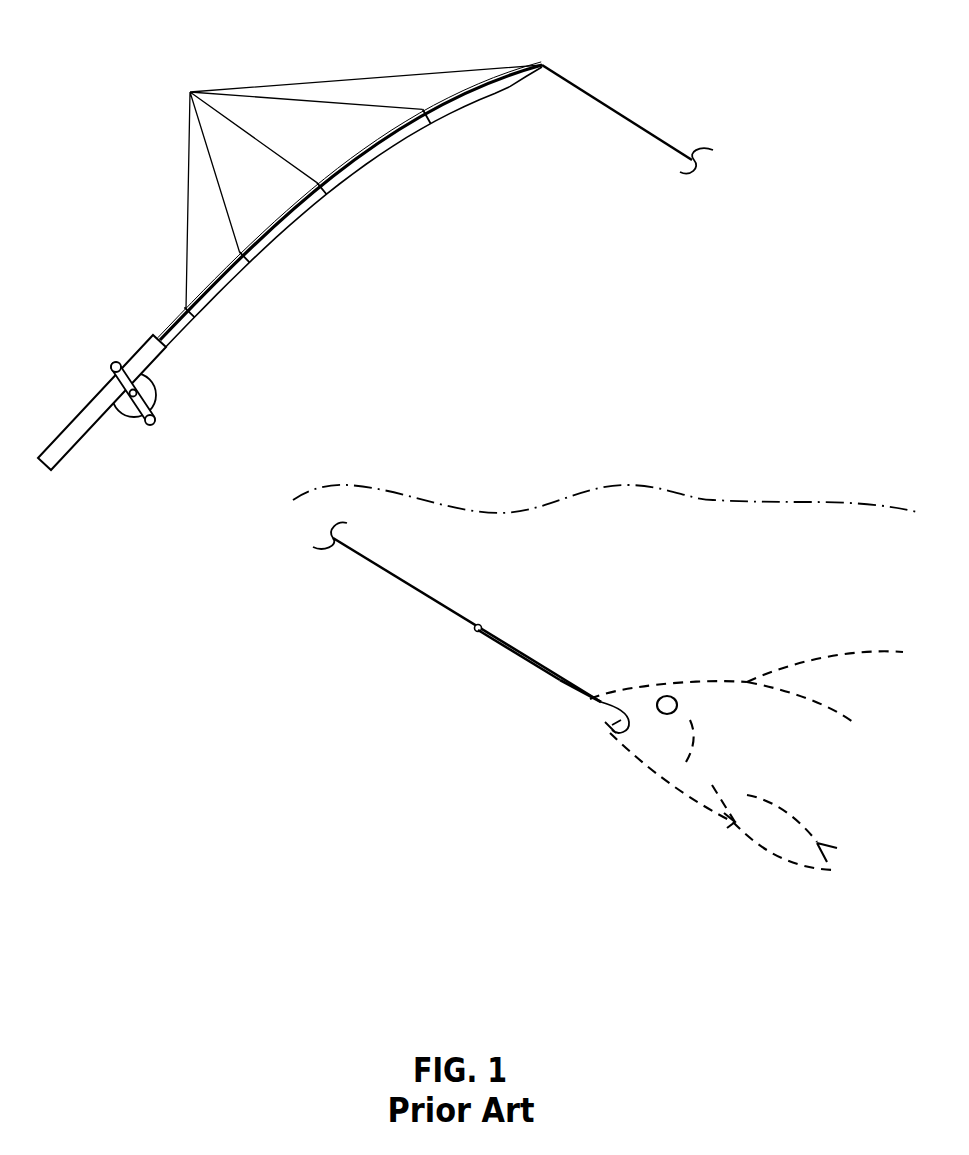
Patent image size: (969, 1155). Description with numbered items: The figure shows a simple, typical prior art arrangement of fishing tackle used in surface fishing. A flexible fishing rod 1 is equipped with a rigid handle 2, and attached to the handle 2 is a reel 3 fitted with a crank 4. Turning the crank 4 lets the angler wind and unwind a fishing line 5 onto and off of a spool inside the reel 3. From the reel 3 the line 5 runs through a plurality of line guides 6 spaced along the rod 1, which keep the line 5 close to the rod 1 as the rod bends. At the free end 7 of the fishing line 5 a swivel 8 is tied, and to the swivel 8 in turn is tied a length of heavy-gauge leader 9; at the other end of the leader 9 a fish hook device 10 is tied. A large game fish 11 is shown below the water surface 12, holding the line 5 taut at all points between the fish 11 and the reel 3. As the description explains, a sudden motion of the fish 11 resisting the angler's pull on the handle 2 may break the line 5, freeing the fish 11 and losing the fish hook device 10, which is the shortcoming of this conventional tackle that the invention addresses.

The fishing rod 1 is at (362, 157).
The handle 2 is at (72, 432).
The reel 3 is at (122, 408).
The crank 4 is at (146, 427).
The fishing line 5 is at (162, 335).
The line guides 6 is at (349, 190).
The free end 7 is at (472, 625).
The swivel 8 is at (480, 634).
The leader 9 is at (535, 663).
The fish hook device 10 is at (627, 732).
The game fish 11 is at (698, 777).
The water surface 12 is at (473, 510).